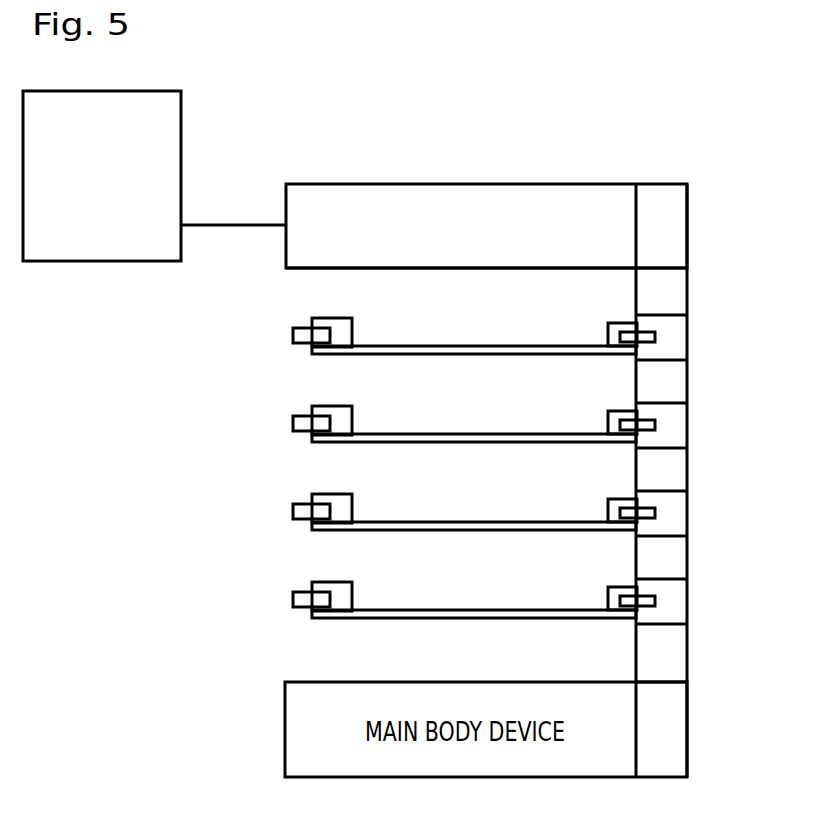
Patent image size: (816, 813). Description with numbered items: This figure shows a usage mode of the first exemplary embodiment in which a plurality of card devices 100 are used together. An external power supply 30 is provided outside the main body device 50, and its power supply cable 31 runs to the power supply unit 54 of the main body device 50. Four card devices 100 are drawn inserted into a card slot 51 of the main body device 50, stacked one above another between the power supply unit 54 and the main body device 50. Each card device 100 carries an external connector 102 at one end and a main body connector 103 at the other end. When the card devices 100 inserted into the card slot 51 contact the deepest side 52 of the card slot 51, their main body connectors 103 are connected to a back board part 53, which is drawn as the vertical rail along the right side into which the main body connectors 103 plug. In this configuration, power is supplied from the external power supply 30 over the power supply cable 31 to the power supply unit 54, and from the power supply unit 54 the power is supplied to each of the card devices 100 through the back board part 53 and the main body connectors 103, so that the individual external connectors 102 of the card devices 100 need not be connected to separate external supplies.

The external power supply 30 is at (182, 108).
The power supply cable 31 is at (236, 227).
The main body device 50 is at (555, 162).
The card slot 51 is at (495, 270).
The deepest side 52 is at (633, 297).
The back board part 53 is at (688, 380).
The power supply unit 54 is at (387, 183).
The card device 100 is at (467, 329).
The external connector 102 is at (292, 331).
The main body connector 103 is at (655, 336).